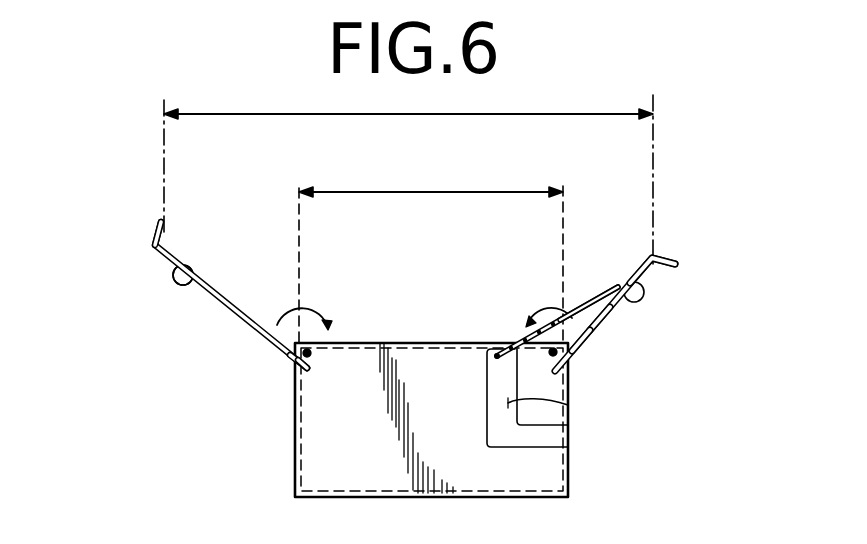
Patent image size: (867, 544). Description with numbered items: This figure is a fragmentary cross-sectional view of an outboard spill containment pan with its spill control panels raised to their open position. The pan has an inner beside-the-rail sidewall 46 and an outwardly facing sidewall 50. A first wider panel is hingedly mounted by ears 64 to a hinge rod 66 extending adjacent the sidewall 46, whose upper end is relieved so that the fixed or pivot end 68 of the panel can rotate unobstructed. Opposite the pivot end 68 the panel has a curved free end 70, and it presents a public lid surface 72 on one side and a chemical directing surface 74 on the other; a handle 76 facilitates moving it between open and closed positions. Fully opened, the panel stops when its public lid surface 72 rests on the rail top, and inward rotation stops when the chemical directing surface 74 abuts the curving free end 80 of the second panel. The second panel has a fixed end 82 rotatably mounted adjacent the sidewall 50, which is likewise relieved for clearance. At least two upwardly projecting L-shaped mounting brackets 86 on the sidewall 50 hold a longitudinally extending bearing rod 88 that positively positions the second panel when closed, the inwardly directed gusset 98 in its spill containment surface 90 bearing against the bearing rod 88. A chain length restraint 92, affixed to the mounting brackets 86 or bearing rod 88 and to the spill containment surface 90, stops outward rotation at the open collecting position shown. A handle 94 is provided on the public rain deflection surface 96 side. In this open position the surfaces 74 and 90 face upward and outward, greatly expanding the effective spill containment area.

The inner beside-the-rail sidewall 46 is at (294, 452).
The outwardly facing sidewall 50 is at (568, 437).
The ears 64 is at (311, 353).
The hinge rod 66 is at (311, 356).
The fixed or pivot end 68 is at (295, 364).
The curved free end 70 is at (155, 232).
The public lid surface 72 is at (252, 327).
The chemical directing surface 74 is at (190, 265).
The handle 76 is at (182, 286).
The curving free end 80 is at (677, 264).
The fixed end 82 is at (567, 366).
The L-shaped mounting brackets 86 is at (567, 406).
The bearing rod 88 is at (495, 358).
The spill containment surface 90 is at (637, 272).
The chain length restraint 92 is at (577, 302).
The handle 94 is at (645, 293).
The public rain deflection surface 96 is at (602, 326).
The inwardly directed gusset 98 is at (586, 342).